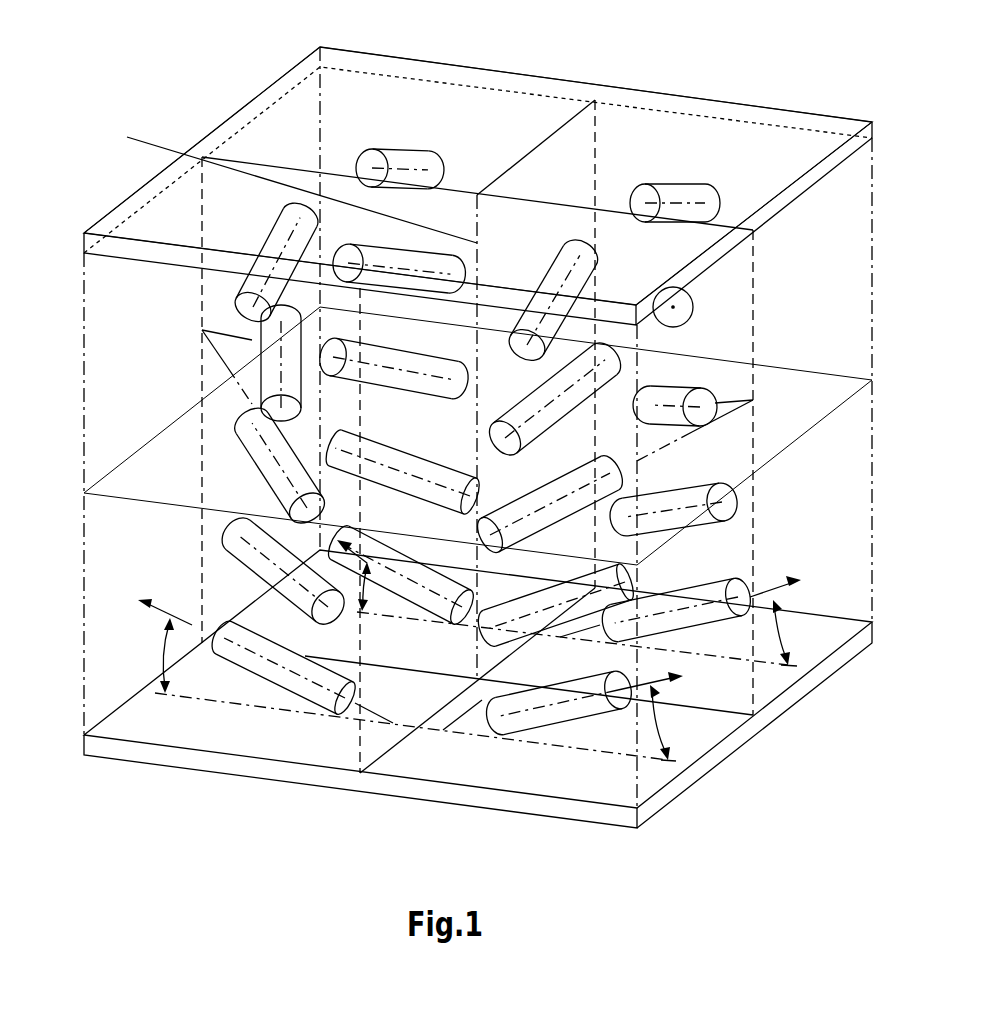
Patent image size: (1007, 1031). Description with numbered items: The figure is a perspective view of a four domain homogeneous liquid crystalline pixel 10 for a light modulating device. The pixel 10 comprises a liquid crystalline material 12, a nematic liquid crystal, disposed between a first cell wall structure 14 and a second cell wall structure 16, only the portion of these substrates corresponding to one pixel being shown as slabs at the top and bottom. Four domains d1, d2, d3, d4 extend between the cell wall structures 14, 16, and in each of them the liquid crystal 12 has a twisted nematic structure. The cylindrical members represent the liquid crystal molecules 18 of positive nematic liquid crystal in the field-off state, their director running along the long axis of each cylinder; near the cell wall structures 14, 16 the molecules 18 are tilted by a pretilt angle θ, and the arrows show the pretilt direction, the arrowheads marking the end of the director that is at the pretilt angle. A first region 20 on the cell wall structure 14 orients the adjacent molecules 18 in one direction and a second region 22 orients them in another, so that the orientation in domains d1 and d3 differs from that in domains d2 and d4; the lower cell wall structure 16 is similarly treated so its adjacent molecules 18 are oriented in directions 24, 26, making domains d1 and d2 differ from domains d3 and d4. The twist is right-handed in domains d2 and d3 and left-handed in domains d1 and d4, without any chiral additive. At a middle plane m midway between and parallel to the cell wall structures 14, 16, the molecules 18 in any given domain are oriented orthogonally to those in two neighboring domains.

The liquid crystalline pixel 10 is at (70, 279).
The liquid crystalline material 12 is at (833, 293).
The first cell wall structure 14 is at (798, 187).
The second cell wall structure 16 is at (843, 657).
The liquid crystal molecules 18 is at (222, 363).
The first region 20 is at (190, 213).
The second region 22 is at (637, 147).
The orientation direction 24 is at (722, 688).
The orientation direction 26 is at (298, 633).
The middle plane m is at (833, 372).
The first domain d1 is at (110, 660).
The second domain d2 is at (283, 138).
The third domain d3 is at (480, 748).
The fourth domain d4 is at (847, 508).